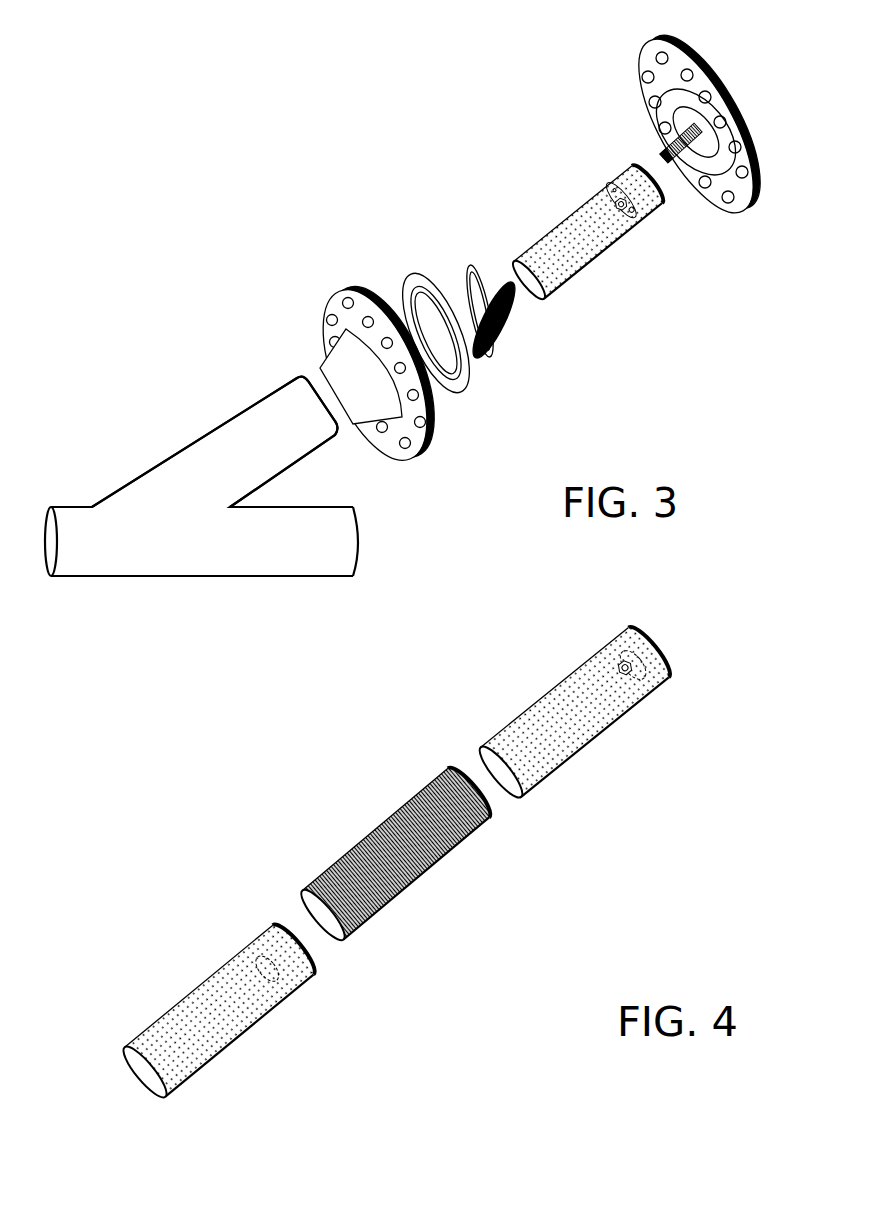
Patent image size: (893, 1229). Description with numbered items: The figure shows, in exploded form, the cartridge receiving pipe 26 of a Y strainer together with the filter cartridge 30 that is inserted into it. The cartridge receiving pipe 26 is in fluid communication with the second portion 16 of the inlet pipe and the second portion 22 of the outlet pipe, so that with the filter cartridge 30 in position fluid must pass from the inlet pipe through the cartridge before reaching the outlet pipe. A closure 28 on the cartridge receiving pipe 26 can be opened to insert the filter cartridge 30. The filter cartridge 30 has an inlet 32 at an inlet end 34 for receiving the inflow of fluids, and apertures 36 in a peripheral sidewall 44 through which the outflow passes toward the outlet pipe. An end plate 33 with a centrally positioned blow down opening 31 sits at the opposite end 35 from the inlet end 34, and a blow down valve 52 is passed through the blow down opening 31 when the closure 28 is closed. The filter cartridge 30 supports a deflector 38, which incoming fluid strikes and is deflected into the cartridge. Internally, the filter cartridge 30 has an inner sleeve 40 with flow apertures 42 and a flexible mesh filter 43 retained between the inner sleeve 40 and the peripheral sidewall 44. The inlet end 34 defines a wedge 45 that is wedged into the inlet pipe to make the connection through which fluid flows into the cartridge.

In FIG. 3, the second portion of inlet pipe 16 is at (56, 578).
In FIG. 3, the second portion of outlet pipe 22 is at (346, 574).
In FIG. 3, the cartridge receiving pipe 26 is at (226, 420).
In FIG. 3, the closure 28 is at (650, 45).
In FIG. 3, the filter cartridge 30 is at (604, 239).
In FIG. 4, the filter cartridge 30 is at (715, 677).
In FIG. 3, the blow down opening 31 is at (627, 217).
In FIG. 4, the blow down opening 31 is at (623, 680).
In FIG. 3, the inlet 32 is at (497, 270).
In FIG. 3, the end plate 33 is at (613, 190).
In FIG. 4, the end plate 33 is at (598, 653).
In FIG. 3, the inlet end 34 is at (545, 291).
In FIG. 4, the inlet end 34 is at (483, 743).
In FIG. 3, the opposite end 35 is at (667, 197).
In FIG. 4, the opposite end 35 is at (653, 638).
In FIG. 3, the apertures 36 is at (585, 253).
In FIG. 4, the apertures 36 is at (580, 722).
In FIG. 3, the deflector 38 is at (500, 287).
In FIG. 4, the inner sleeve 40 is at (208, 980).
In FIG. 4, the flow apertures 42 is at (173, 1027).
In FIG. 4, the flexible mesh filter 43 is at (447, 857).
In FIG. 4, the peripheral sidewall 44 is at (590, 714).
In FIG. 3, the wedge 45 is at (537, 300).
In FIG. 3, the blow down valve 52 is at (665, 157).